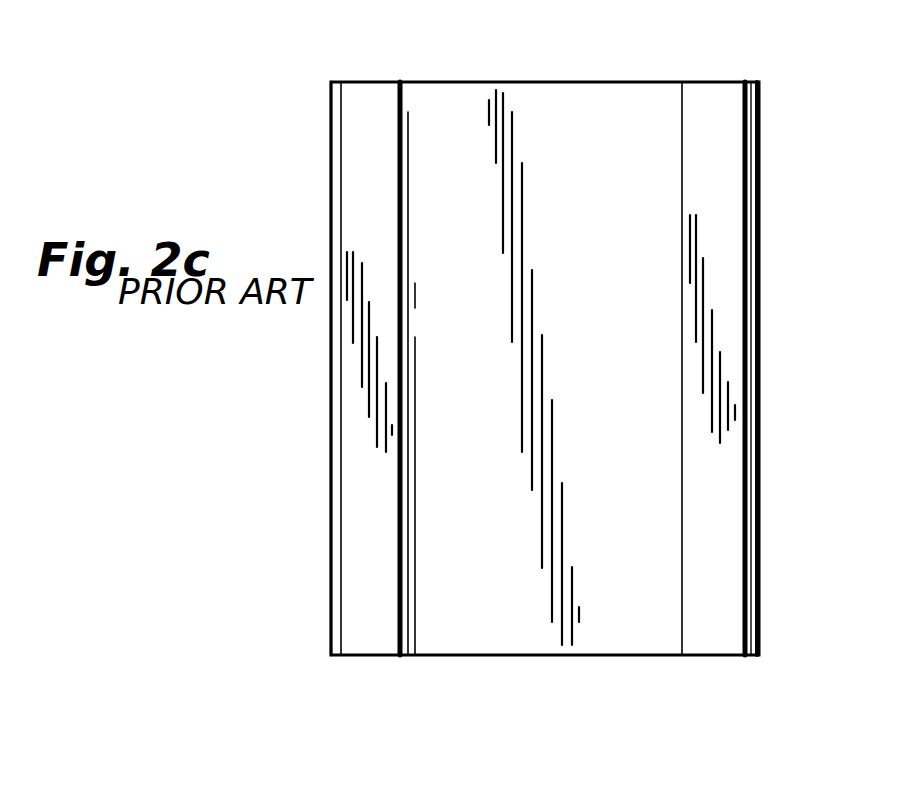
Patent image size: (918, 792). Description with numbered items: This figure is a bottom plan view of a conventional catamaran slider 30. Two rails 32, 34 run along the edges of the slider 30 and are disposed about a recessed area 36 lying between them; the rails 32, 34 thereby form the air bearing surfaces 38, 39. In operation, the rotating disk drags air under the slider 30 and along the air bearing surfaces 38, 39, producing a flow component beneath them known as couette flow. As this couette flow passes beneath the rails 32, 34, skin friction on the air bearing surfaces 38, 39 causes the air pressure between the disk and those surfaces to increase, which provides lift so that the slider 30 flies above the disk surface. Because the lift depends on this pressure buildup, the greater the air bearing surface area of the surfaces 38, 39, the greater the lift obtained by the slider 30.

The catamaran slider 30 is at (323, 363).
The rail 32 is at (372, 657).
The rail 34 is at (708, 657).
The recessed area 36 is at (539, 104).
The air bearing surface 38 is at (365, 126).
The air bearing surface 39 is at (717, 132).